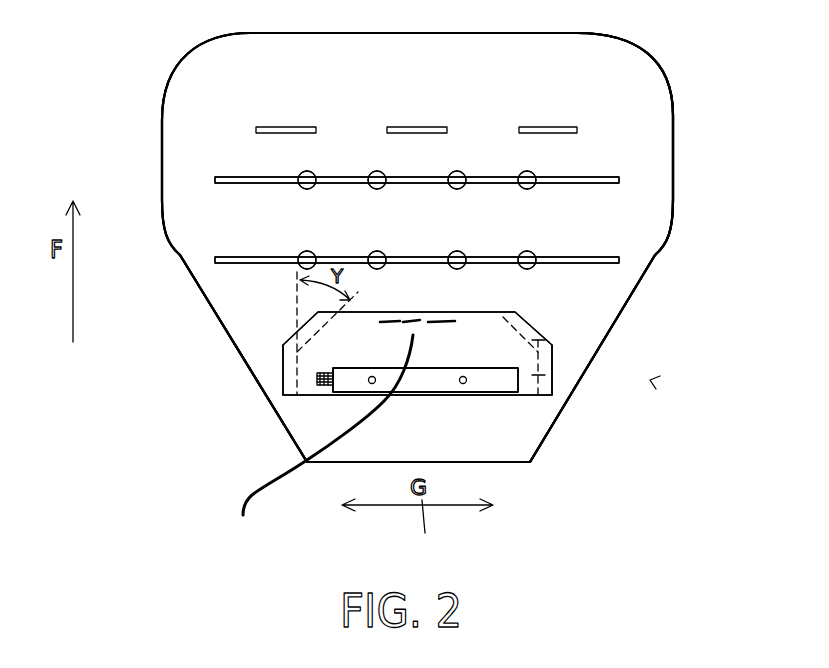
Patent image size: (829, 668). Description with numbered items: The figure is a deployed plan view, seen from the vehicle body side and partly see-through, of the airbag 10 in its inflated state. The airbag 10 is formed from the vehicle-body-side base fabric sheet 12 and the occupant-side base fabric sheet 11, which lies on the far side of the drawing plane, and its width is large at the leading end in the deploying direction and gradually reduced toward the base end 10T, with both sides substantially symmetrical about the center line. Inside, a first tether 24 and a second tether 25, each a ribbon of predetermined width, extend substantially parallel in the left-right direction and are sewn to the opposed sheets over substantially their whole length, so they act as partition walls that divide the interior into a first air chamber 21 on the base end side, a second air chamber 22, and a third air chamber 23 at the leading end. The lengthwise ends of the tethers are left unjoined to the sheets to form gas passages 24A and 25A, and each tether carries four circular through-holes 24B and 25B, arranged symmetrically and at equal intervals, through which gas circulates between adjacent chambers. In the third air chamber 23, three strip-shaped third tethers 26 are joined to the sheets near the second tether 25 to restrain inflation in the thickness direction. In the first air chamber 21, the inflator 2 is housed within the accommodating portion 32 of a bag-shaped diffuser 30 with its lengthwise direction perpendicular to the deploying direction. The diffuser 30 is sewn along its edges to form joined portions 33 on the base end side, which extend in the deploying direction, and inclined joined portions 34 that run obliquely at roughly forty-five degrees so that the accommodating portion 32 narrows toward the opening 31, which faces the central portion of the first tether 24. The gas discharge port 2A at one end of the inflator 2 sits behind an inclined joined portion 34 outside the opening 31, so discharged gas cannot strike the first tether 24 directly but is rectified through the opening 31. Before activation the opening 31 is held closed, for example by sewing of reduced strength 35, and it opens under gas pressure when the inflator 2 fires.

The airbag 10 is at (170, 79).
The vehicle-body-side base fabric sheet 12 is at (182, 117).
The occupant-side base fabric sheet 11 is at (162, 138).
The third air chamber 23 is at (587, 73).
The second air chamber 22 is at (590, 213).
The first air chamber 21 is at (565, 300).
The third tethers 26 is at (560, 127).
The second tether 25 is at (572, 180).
The through-holes 25B is at (527, 170).
The gas passages 25A is at (190, 182).
The first tether 24 is at (267, 263).
The through-holes 24B is at (307, 251).
The gas passages 24A is at (200, 263).
The diffuser 30 is at (527, 397).
The opening 31 is at (462, 310).
The inclined joined portions 34 is at (300, 325).
The joined portions 33 is at (292, 380).
The accommodating portion 32 is at (515, 353).
The inflator 2 is at (353, 385).
The gas discharge port 2A is at (323, 386).
The sewing with reduced sewing strength 35 is at (319, 439).
The base end 10T is at (650, 380).